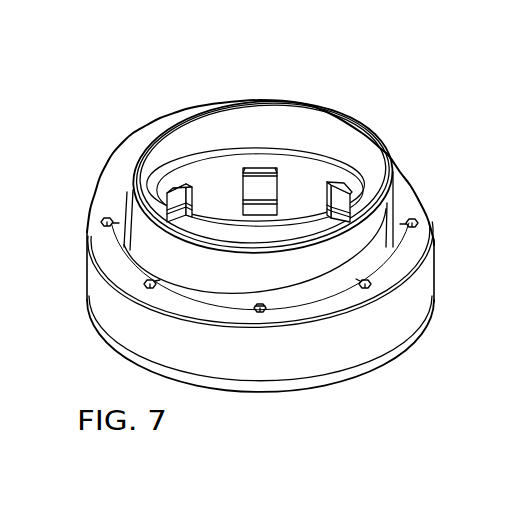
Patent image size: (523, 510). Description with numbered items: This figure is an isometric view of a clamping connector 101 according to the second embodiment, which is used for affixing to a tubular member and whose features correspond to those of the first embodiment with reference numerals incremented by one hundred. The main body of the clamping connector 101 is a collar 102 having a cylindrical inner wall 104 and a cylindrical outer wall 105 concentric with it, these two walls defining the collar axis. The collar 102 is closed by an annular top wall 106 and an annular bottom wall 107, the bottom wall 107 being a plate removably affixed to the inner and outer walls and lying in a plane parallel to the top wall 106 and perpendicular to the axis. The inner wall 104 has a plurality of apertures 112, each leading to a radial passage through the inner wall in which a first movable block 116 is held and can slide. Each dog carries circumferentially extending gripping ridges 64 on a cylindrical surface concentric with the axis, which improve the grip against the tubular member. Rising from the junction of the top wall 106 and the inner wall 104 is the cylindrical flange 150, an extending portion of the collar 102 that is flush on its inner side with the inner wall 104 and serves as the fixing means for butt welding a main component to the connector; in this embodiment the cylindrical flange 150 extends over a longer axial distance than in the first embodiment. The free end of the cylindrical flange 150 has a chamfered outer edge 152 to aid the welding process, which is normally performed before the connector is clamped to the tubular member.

The clamping connector 101 is at (257, 234).
The collar 102 is at (257, 259).
The cylindrical inner wall 104 is at (289, 176).
The cylindrical outer wall 105 is at (422, 295).
The annular top wall 106 is at (419, 222).
The annular bottom wall 107 is at (358, 371).
The aperture 112 is at (280, 186).
The first movable block 116 is at (263, 168).
The gripping ridges 64 is at (181, 200).
The cylindrical flange 150 is at (388, 210).
The chamfered outer edge 152 is at (385, 154).